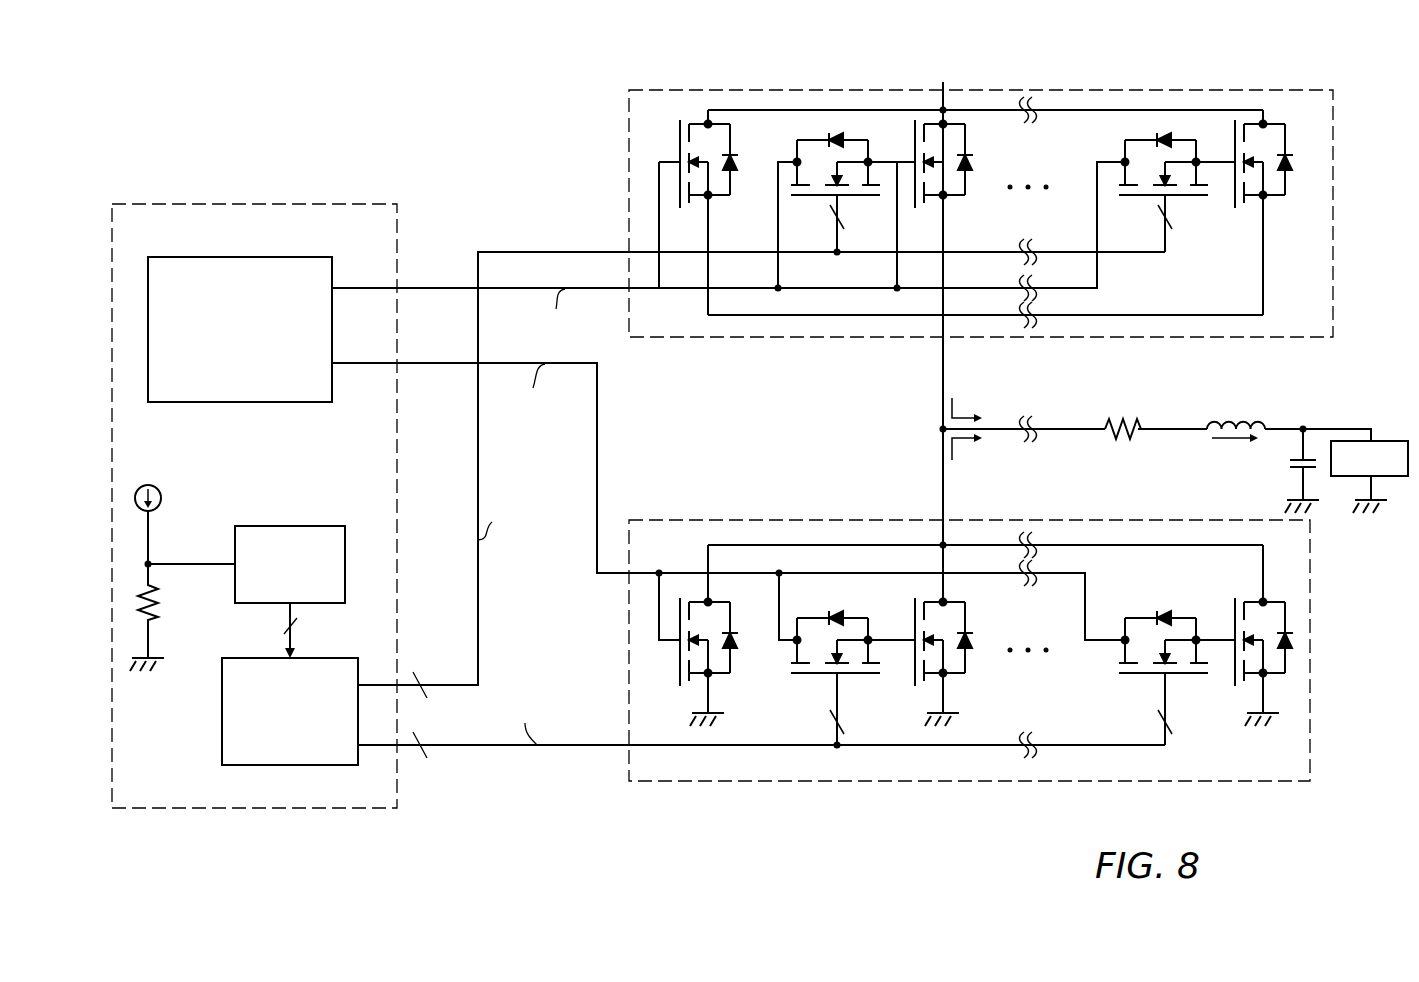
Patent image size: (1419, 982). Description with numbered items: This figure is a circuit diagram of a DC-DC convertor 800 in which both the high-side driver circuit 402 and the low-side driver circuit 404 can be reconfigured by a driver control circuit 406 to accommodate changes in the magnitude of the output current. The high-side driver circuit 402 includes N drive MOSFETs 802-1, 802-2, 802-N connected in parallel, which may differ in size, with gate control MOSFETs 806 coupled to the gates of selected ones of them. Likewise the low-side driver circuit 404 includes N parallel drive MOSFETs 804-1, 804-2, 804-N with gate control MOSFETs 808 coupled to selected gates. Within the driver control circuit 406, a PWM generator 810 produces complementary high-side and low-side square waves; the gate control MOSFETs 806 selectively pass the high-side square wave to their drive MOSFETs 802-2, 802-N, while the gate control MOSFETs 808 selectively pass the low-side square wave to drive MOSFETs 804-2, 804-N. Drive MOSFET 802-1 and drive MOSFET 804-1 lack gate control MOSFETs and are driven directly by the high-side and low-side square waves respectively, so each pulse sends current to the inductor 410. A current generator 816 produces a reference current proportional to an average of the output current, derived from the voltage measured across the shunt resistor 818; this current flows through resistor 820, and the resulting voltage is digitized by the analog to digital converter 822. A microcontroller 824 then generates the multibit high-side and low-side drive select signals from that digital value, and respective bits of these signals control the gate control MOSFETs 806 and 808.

The DC-DC convertor 800 is at (441, 84).
The high-side driver circuit 402 is at (1065, 90).
The low-side driver circuit 404 is at (760, 520).
The driver control circuit 406 is at (273, 204).
The PWM generator 810 is at (235, 257).
The current generator 816 is at (160, 488).
The resistor 820 is at (161, 602).
The analog to digital converter 822 is at (265, 526).
The microcontroller 824 is at (308, 658).
The drive MOSFET 802-1 is at (716, 196).
The drive MOSFET 802-2 is at (951, 196).
The drive MOSFET 802-N is at (1301, 211).
The gate control MOSFET 806 is at (1146, 194).
The drive MOSFET 804-1 is at (678, 662).
The drive MOSFET 804-2 is at (913, 662).
The drive MOSFET 804-N is at (1233, 662).
The gate control MOSFET 808 is at (867, 605).
The shunt resistor 818 is at (1133, 407).
The inductor 410 is at (1232, 418).